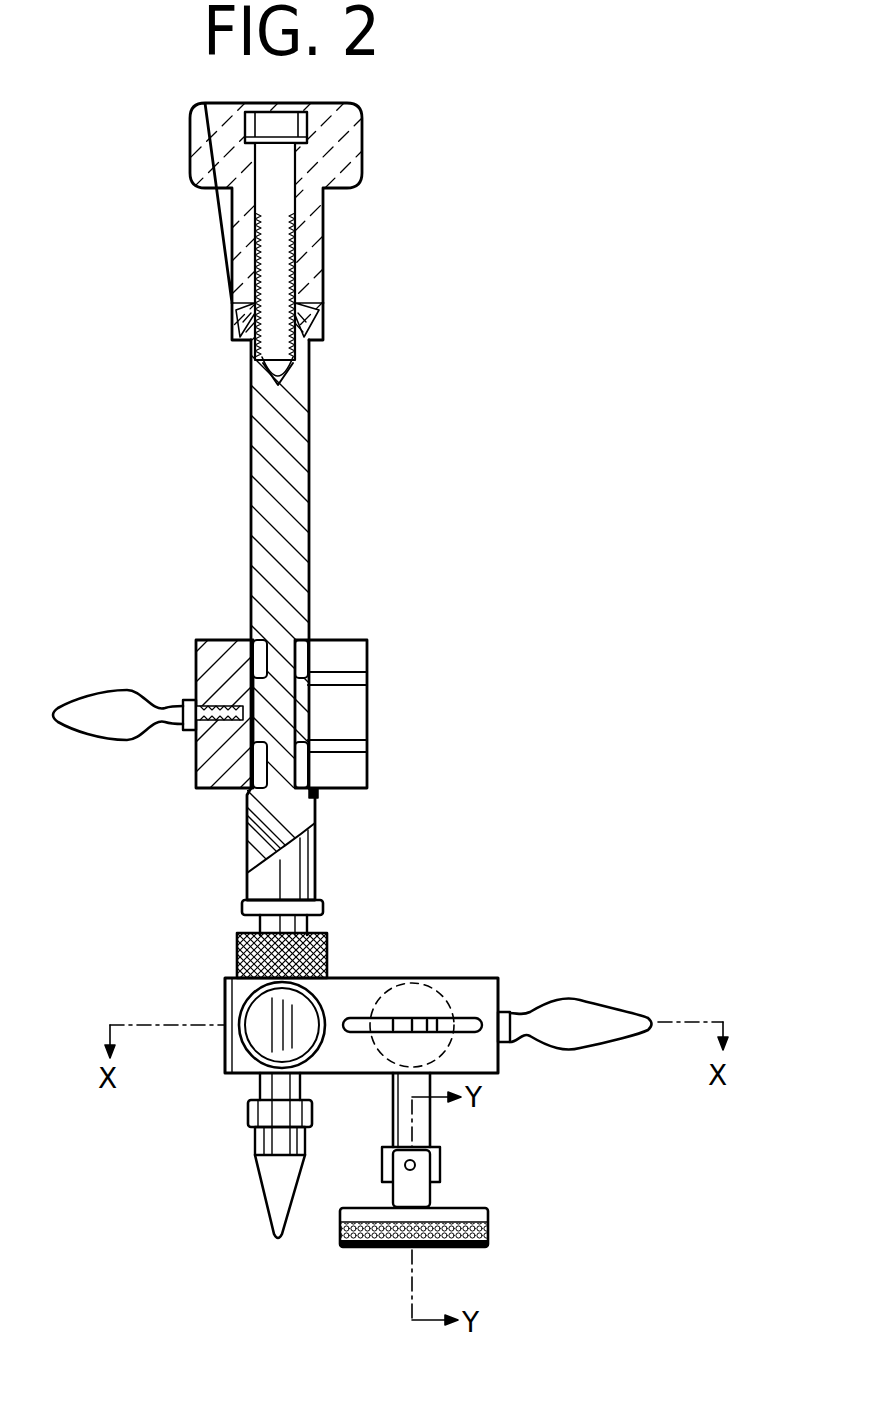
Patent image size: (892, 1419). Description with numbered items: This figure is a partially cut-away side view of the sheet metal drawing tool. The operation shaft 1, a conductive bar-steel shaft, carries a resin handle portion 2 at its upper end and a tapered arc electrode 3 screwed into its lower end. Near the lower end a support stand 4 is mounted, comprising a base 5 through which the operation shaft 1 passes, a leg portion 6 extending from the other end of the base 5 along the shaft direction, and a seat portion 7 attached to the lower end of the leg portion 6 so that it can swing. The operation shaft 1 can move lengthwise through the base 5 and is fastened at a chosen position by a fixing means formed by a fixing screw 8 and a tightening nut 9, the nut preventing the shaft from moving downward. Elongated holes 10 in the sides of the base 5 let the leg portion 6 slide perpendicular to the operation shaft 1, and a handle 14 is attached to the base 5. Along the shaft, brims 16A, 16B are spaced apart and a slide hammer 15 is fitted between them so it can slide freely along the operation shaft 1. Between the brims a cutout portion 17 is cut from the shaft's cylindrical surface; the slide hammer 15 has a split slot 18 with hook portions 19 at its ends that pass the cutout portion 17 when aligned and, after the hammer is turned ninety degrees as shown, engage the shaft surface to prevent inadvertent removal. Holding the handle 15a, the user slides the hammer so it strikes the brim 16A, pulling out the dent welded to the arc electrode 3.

The operation shaft 1 is at (309, 470).
The handle portion 2 is at (358, 143).
The arc electrode 3 is at (265, 1168).
The support stand 4 is at (410, 1045).
The base 5 is at (474, 990).
The leg portion 6 is at (430, 1140).
The seat portion 7 is at (490, 1208).
The fixing screw 8 is at (262, 1040).
The tightening nut 9 is at (240, 952).
The elongated holes 10 is at (357, 1018).
The handle 14 is at (587, 1013).
The slide hammer 15 is at (210, 645).
The handle 15a is at (102, 700).
The brim 16A is at (323, 320).
The brim 16B is at (315, 793).
The cutout portion 17 is at (303, 643).
The split slot 18 is at (353, 712).
The hook portions 19 is at (358, 648).